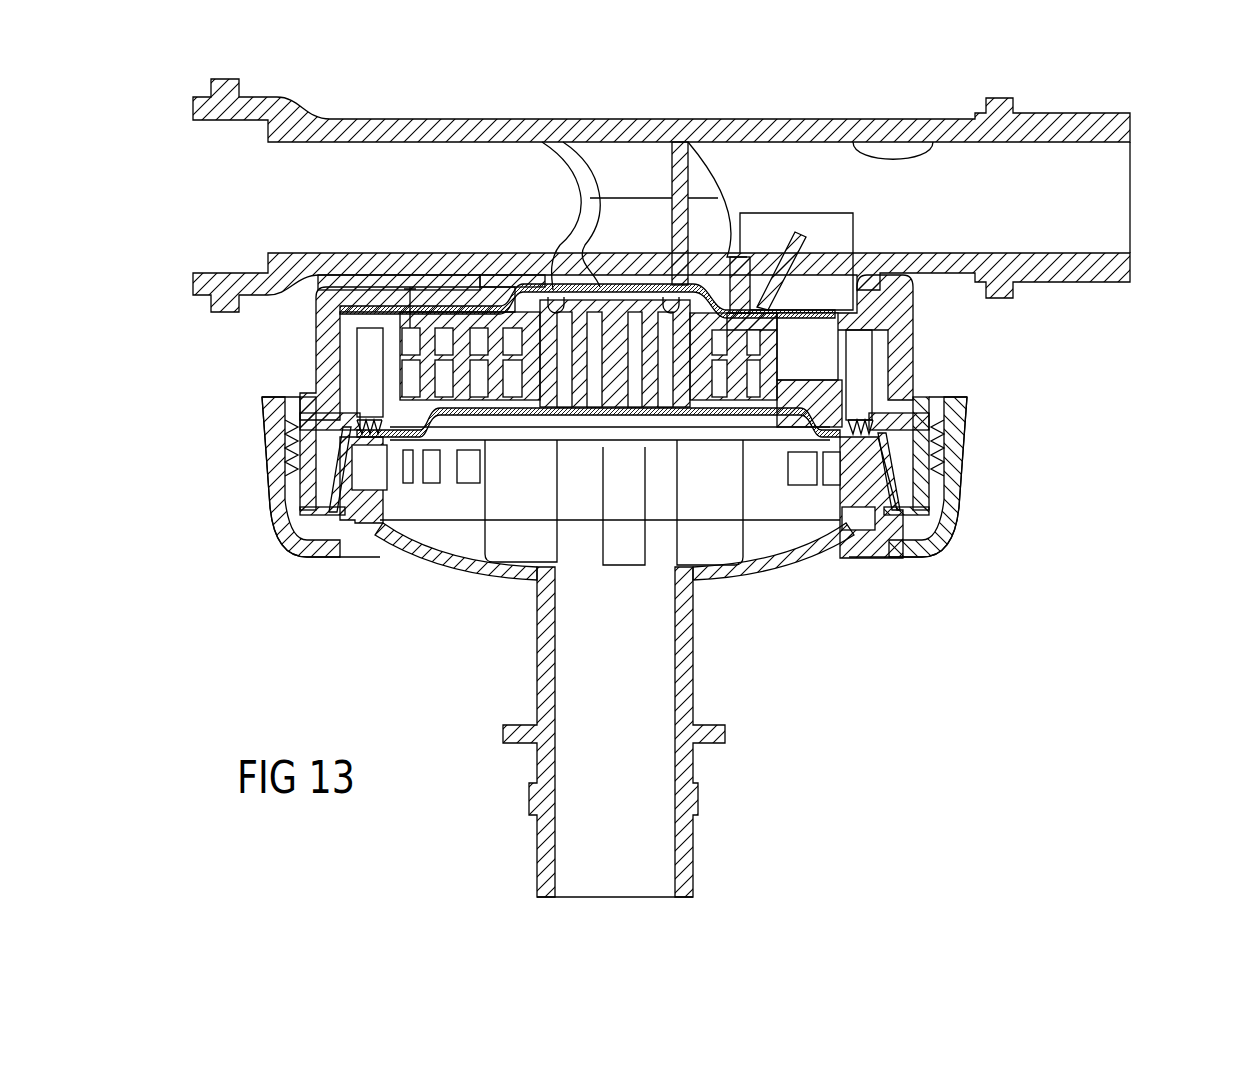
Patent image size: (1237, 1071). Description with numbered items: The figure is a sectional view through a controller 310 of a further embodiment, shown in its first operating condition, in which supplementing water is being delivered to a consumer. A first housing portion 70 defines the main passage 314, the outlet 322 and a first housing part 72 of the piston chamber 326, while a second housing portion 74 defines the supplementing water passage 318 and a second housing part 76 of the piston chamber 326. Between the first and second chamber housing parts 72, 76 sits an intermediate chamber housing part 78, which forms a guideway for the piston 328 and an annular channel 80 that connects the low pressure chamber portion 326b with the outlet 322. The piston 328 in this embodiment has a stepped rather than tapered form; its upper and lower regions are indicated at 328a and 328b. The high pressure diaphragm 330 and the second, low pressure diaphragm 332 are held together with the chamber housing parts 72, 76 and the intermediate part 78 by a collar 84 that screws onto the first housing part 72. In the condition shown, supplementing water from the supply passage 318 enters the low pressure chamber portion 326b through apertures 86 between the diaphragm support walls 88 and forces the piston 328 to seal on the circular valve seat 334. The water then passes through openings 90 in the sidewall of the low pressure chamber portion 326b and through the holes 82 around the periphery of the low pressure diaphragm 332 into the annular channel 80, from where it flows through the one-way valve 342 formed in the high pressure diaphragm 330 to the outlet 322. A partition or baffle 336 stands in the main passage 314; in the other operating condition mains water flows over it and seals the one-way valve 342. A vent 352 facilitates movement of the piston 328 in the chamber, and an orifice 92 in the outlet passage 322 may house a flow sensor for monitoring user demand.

The controller 310 is at (255, 72).
The main passage 314 is at (404, 155).
The outlet 322 is at (1107, 185).
The orifice 92 is at (880, 135).
The partition/baffle 336 is at (680, 172).
The membrane upper portion 328a is at (572, 250).
The one-way valve 342 is at (780, 245).
The first housing part 72 is at (315, 322).
The first housing portion 70 is at (287, 303).
The vent 352 is at (410, 296).
The high pressure diaphragm 330 is at (445, 320).
The piston 328 is at (606, 378).
The valve seat 334 is at (562, 290).
The membrane lower portion 328b is at (668, 420).
The annular channel 80 is at (368, 368).
The intermediate chamber housing part 78 is at (330, 423).
The holes 82 is at (330, 455).
The collar 84 is at (955, 510).
The piston chamber 326 is at (972, 380).
The low pressure chamber portion 326b is at (768, 535).
The second diaphragm 332 is at (362, 478).
The second housing portion 74 is at (505, 612).
The openings 90 is at (433, 470).
The second housing part 76 is at (470, 573).
The apertures 86 is at (622, 553).
The diaphragm support walls 88 is at (712, 553).
The supplementing water passage 318 is at (590, 684).